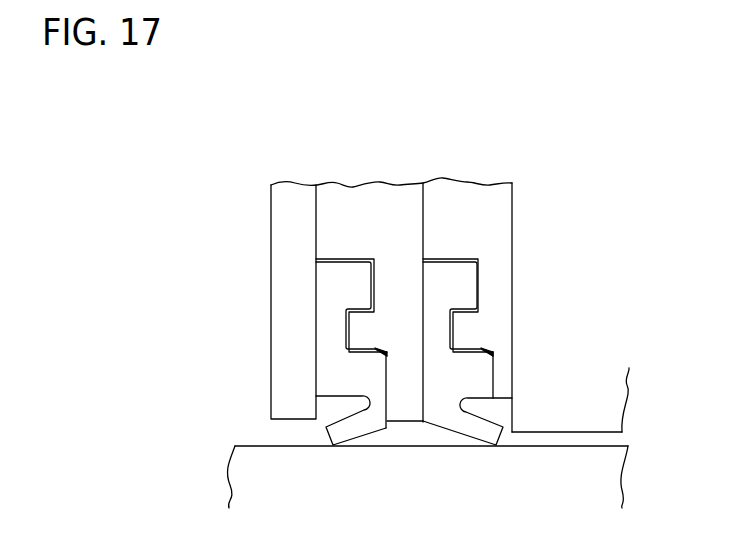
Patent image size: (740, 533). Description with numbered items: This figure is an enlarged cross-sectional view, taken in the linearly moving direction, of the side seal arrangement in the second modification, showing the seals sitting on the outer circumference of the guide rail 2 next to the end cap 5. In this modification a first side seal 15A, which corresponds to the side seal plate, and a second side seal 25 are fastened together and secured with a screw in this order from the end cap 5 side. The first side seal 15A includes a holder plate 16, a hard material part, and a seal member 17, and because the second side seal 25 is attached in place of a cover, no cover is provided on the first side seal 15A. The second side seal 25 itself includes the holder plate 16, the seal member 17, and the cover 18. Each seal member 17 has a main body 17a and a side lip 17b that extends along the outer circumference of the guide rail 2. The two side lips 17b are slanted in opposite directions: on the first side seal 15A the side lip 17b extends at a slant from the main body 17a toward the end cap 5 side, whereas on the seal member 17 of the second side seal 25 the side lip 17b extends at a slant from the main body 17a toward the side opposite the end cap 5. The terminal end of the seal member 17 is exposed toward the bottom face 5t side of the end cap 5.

The guide rail 2 is at (250, 446).
The end cap 5 is at (575, 360).
The bottom face 5t is at (574, 438).
The first side seal 15A is at (498, 217).
The holder plate 16 is at (363, 198).
The seal member 17 is at (332, 276).
The main body 17a is at (358, 372).
The side lip 17b is at (347, 432).
The cover 18 is at (271, 240).
The second side seal 25 is at (383, 93).